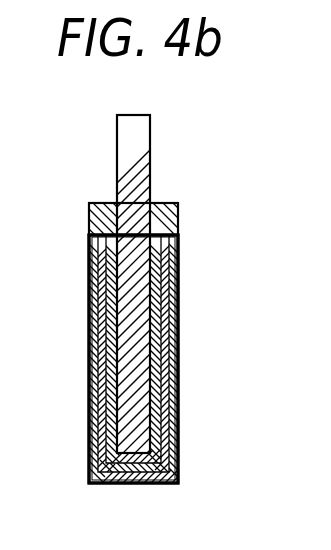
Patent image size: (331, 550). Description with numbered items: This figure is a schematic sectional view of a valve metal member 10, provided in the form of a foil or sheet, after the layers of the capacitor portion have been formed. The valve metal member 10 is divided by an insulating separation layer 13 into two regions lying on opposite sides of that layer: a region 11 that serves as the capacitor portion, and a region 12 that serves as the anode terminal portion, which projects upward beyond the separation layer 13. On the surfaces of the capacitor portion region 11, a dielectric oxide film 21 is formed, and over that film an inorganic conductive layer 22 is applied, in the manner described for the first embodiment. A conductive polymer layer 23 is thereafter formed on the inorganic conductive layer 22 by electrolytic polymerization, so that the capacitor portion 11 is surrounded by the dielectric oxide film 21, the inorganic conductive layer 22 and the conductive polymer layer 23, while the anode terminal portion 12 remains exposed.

The valve metal member 10 is at (146, 523).
The region serving as the capacitor portion 11 is at (157, 299).
The region serving as the anode terminal portion 12 is at (151, 183).
The insulating separation layer 13 is at (178, 226).
The dielectric oxide film 21 is at (168, 372).
The inorganic conductive layer 22 is at (173, 413).
The conductive polymer layer 23 is at (180, 347).